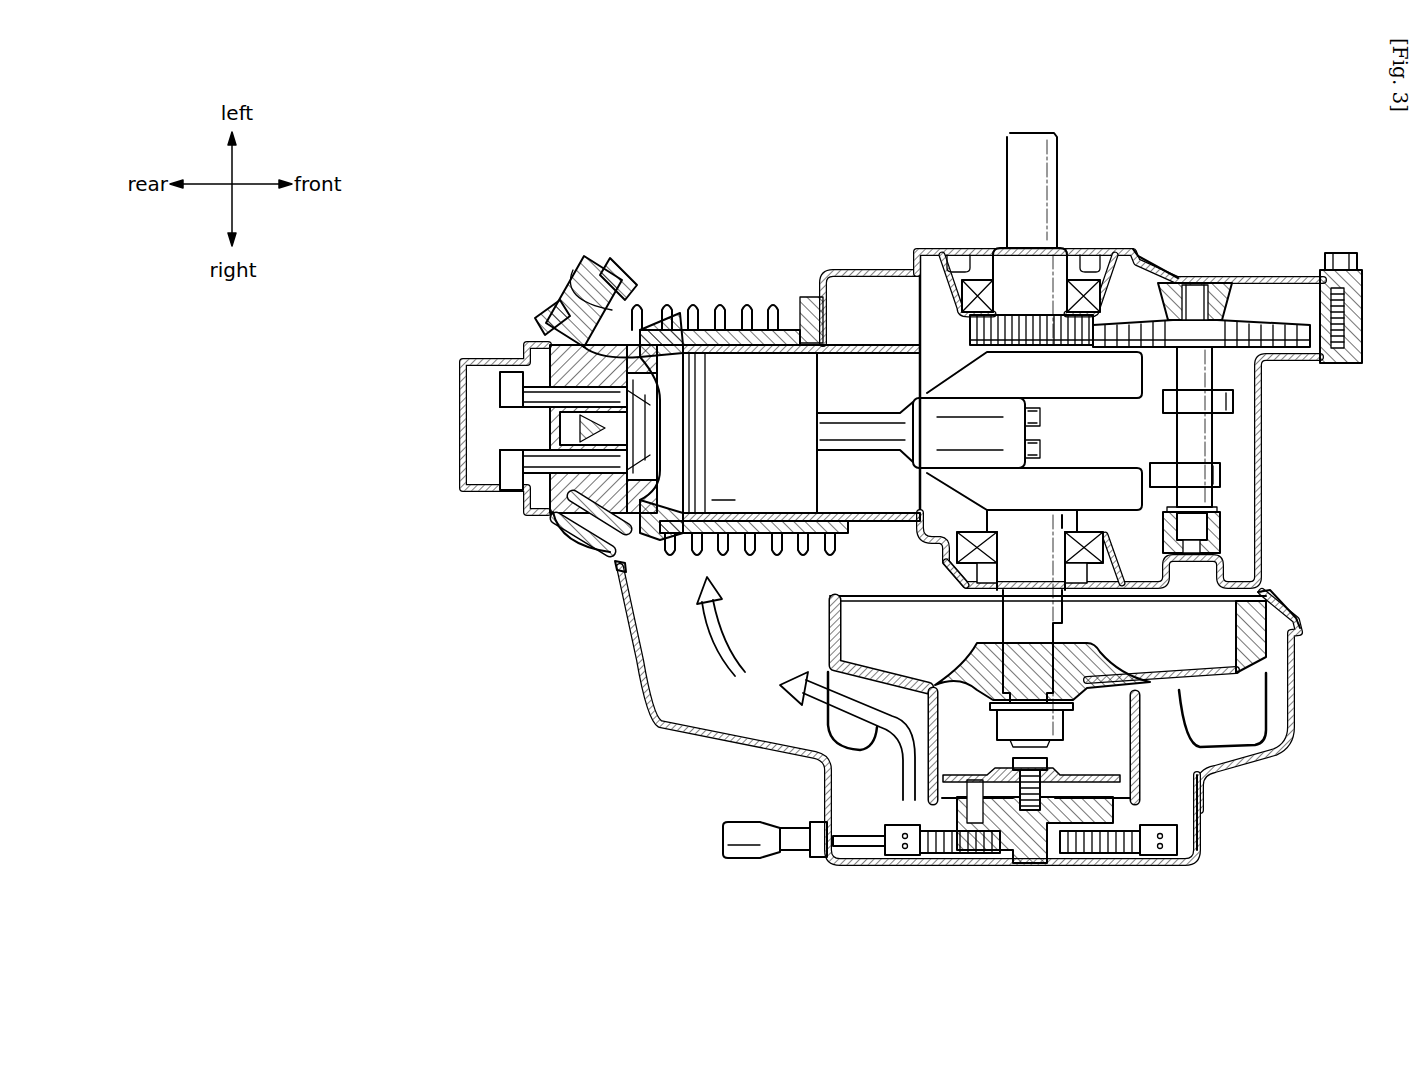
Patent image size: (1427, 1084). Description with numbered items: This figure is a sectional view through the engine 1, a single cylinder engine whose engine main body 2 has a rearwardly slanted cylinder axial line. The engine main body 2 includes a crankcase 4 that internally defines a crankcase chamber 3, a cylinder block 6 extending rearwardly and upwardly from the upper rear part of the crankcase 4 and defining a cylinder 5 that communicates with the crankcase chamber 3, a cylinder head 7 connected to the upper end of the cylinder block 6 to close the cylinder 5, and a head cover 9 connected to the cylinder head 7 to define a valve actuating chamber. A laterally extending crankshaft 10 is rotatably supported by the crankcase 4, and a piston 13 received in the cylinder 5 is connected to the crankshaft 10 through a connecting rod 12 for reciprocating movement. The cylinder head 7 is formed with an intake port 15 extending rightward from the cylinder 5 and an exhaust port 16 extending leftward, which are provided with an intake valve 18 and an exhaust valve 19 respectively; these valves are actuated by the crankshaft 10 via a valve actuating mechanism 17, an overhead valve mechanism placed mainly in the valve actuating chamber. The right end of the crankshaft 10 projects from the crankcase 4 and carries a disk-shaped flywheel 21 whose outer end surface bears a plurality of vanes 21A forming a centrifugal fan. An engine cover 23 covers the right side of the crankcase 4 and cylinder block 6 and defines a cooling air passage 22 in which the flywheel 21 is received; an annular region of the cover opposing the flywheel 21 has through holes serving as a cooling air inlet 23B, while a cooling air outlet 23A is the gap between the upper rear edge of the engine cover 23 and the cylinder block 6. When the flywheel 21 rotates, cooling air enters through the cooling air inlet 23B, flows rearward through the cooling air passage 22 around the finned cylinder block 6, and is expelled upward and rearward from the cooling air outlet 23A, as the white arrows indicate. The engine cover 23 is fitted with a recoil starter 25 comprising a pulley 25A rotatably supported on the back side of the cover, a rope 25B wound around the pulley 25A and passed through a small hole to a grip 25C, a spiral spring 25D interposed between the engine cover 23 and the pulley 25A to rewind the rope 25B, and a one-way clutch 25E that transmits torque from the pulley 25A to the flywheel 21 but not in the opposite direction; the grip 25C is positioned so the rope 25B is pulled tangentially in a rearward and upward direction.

The engine 1 is at (470, 218).
The engine main body 2 is at (822, 262).
The crankcase chamber 3 is at (1112, 453).
The crankcase 4 is at (1136, 252).
The cylinder 5 is at (838, 356).
The cylinder block 6 is at (760, 340).
The cylinder head 7 is at (650, 332).
The head cover 9 is at (470, 357).
The crankshaft 10 is at (1008, 172).
The connecting rod 12 is at (857, 422).
The piston 13 is at (803, 478).
The intake port 15 is at (570, 528).
The exhaust port 16 is at (598, 305).
The valve actuating mechanism 17 is at (1225, 430).
The intake valve 18 is at (522, 480).
The exhaust valve 19 is at (520, 388).
The flywheel 21 is at (1260, 636).
The vanes 21A is at (1265, 697).
The cooling air passage 22 is at (788, 631).
The engine cover 23 is at (700, 738).
The cooling air outlet 23A is at (614, 566).
The cooling air inlet 23B is at (1203, 802).
The recoil starter 25 is at (1178, 822).
The pulley 25A is at (913, 858).
The rope 25B is at (871, 848).
The grip 25C is at (744, 850).
The spiral spring 25D is at (1114, 856).
The one-way clutch 25E is at (957, 778).